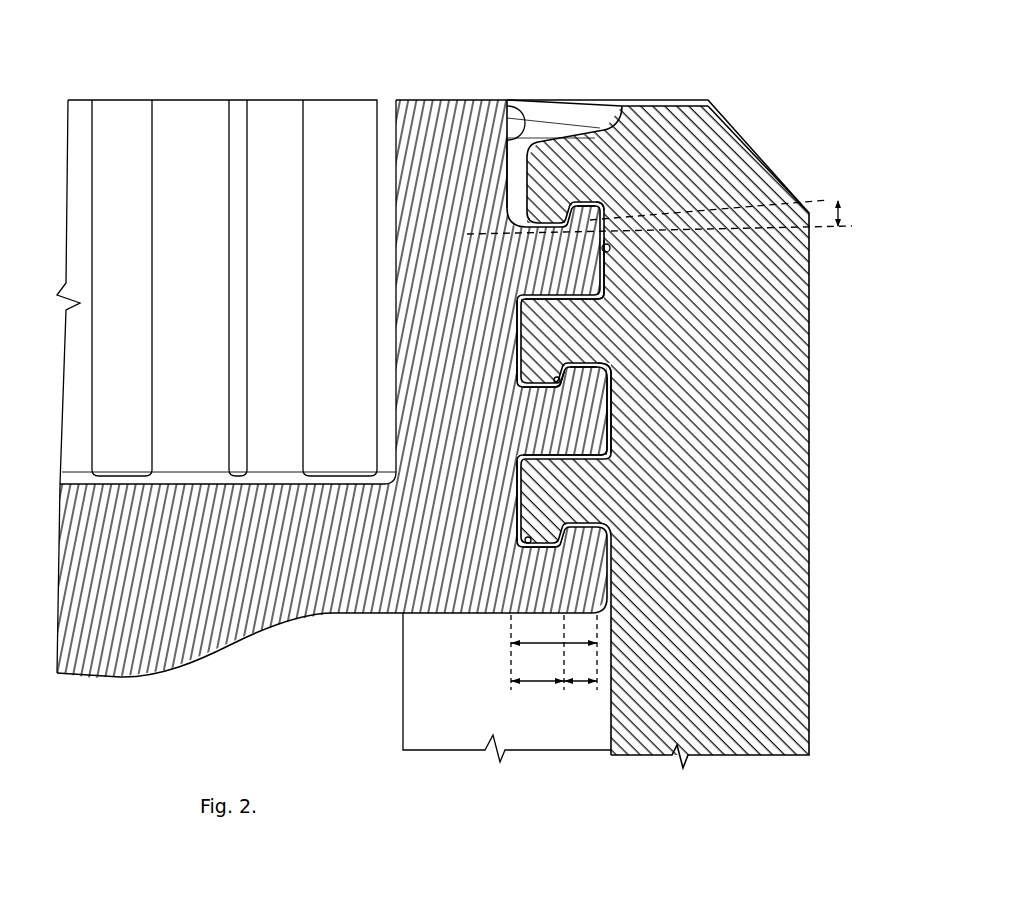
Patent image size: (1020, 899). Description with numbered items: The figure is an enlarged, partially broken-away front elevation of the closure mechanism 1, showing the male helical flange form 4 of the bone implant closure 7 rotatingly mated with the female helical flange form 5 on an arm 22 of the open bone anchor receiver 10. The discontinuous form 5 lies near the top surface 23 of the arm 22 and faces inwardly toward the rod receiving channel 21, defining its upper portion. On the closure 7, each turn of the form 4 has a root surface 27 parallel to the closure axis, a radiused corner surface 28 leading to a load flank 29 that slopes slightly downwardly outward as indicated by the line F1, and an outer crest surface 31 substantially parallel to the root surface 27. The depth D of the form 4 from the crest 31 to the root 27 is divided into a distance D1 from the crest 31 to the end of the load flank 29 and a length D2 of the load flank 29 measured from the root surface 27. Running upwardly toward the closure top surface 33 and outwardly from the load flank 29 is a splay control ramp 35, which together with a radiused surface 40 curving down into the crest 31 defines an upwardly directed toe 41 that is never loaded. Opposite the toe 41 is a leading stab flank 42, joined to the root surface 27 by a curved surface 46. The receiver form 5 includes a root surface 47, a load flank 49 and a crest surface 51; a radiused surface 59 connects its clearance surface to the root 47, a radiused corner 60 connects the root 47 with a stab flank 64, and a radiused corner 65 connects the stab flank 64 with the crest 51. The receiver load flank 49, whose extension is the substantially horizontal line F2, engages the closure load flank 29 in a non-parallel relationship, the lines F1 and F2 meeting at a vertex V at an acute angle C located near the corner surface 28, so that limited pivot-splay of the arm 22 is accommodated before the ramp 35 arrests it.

The closure mechanism 1 is at (538, 102).
The male helical flange form 4 is at (612, 395).
The female helical flange form 5 is at (513, 340).
The bone implant closure 7 is at (132, 100).
The open bone anchor receiver 10 is at (760, 155).
The rod receiving channel 21 is at (499, 673).
The receiver arms 22 is at (790, 448).
The arm top surfaces 23 is at (700, 132).
The root surface 27 is at (525, 117).
The radiused corner surface 28 is at (517, 378).
The load flank 29 is at (545, 390).
The crest surface 31 is at (605, 418).
The top surface of the closure 33 is at (408, 100).
The splay control ramp 35 is at (576, 396).
The radiused surface 40 is at (610, 372).
The toe 41 is at (586, 204).
The stab flank 42 is at (605, 455).
The curved surface 46 is at (552, 480).
The root surface of the female flange form 47 is at (615, 255).
The load flank of the female flange form 49 is at (540, 565).
The crest surface of the female flange form 51 is at (517, 497).
The radiused surface 59 is at (612, 204).
The radiused corner surface 60 is at (605, 297).
The stab flank of the female flange form 64 is at (600, 318).
The radiused corner surface 65 is at (598, 305).
The angle C is at (842, 213).
The flange form depth D is at (554, 652).
The crest-to-load-flank distance D1 is at (580, 697).
The load flank length D2 is at (537, 697).
The load flank reference line F1 is at (848, 228).
The receiver load flank reference line F2 is at (820, 200).
The vertex V is at (535, 232).